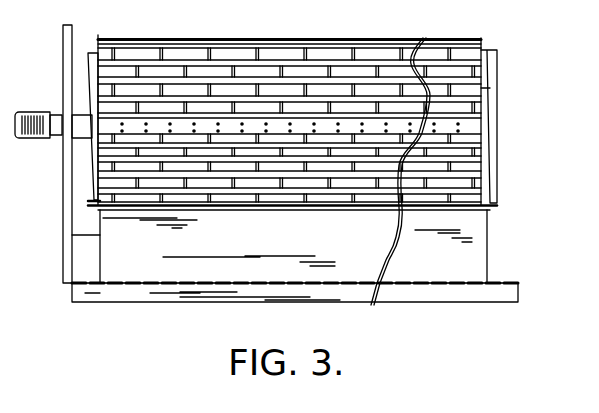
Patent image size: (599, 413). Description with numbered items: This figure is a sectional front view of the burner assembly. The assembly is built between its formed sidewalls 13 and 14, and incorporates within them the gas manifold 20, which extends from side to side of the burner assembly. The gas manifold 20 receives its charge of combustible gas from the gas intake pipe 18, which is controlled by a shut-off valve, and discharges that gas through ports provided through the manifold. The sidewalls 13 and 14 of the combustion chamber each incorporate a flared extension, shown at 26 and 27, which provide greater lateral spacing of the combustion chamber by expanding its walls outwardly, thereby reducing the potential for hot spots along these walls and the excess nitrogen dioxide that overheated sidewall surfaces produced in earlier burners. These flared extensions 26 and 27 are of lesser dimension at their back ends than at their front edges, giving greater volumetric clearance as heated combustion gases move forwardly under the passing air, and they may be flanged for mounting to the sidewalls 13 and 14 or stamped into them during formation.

The sidewall 13 is at (100, 37).
The sidewall 14 is at (480, 37).
The gas intake pipe 18 is at (40, 140).
The gas manifold 20 is at (472, 125).
The flared extension 26 is at (88, 53).
The flared extension 27 is at (495, 50).